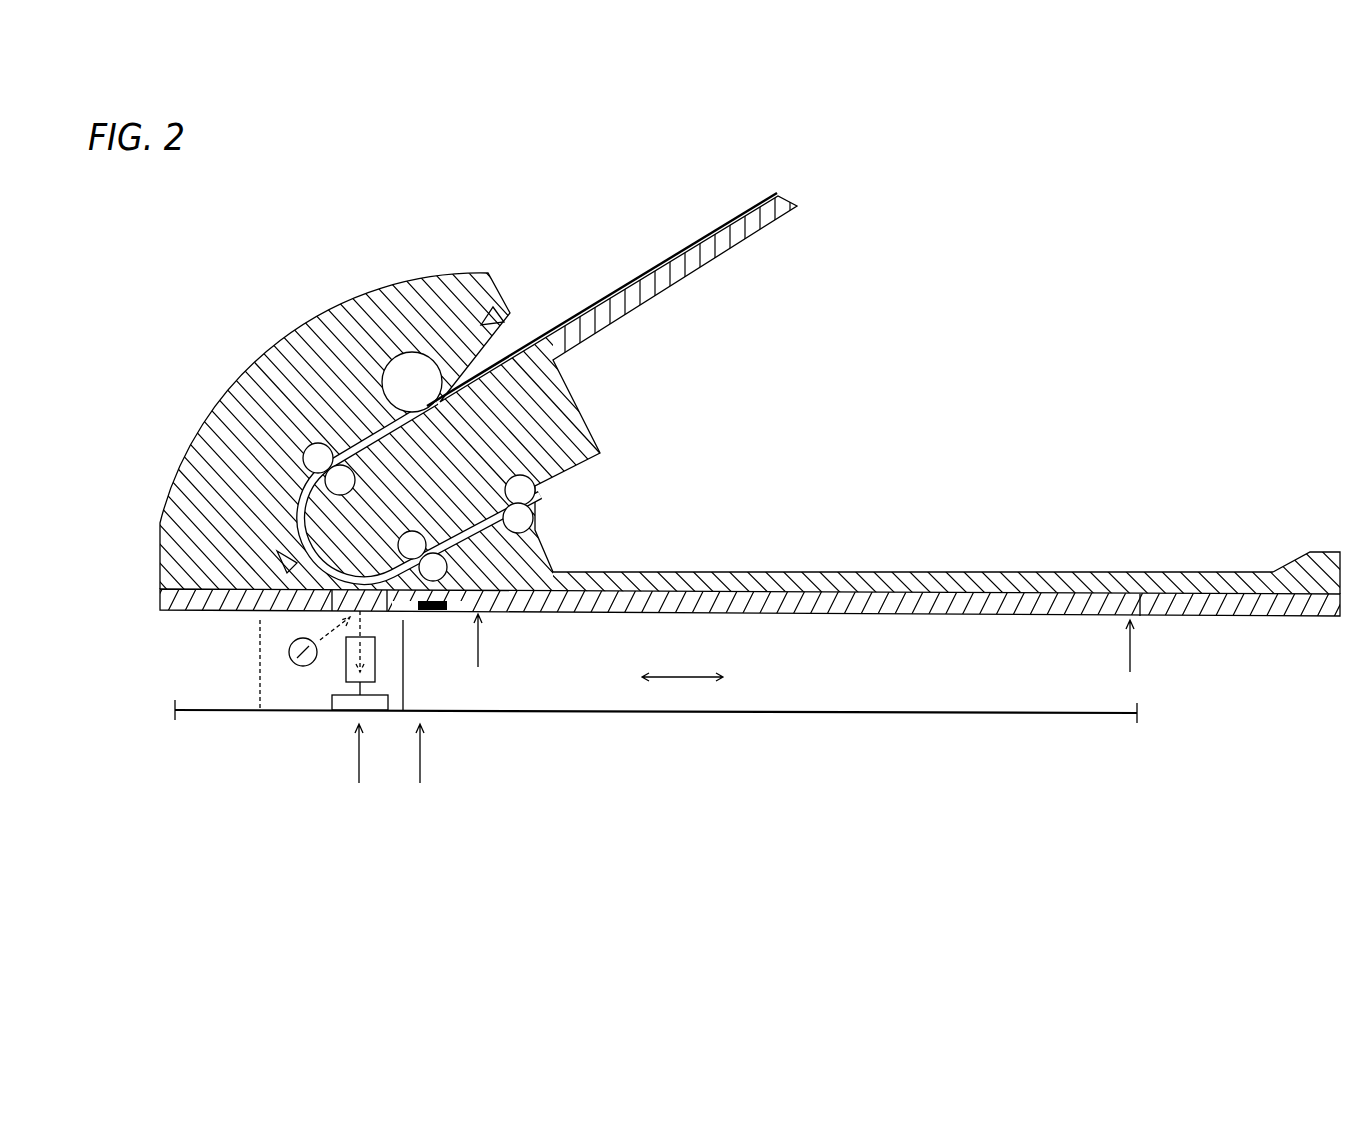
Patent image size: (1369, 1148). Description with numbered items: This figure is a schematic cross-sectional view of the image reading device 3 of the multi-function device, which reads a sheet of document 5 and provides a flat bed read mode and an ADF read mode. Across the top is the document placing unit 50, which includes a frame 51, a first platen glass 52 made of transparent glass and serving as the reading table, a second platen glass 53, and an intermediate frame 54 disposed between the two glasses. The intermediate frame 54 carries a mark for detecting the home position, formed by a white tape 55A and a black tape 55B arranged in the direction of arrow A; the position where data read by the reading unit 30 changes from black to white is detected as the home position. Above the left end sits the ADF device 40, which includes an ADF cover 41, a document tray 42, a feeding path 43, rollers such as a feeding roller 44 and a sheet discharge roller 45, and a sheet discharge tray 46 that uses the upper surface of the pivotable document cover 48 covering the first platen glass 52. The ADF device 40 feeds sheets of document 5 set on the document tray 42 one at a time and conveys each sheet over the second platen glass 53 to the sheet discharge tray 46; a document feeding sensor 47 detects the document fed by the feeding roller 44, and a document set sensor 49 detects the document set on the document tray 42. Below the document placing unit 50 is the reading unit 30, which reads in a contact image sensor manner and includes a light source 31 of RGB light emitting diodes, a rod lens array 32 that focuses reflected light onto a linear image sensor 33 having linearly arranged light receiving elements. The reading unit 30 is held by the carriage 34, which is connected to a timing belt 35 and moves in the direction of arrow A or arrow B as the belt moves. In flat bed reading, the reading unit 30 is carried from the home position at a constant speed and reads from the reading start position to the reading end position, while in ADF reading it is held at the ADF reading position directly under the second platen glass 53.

The image reading device 3 is at (905, 332).
The document 5 is at (672, 258).
The reading unit 30 is at (296, 722).
The light source 31 is at (289, 654).
The rod lens array 32 is at (346, 673).
The linear image sensor 33 is at (342, 711).
The carriage 34 is at (268, 711).
The timing belt 35 is at (955, 714).
The ADF device 40 is at (191, 374).
The ADF cover 41 is at (319, 275).
The document tray 42 is at (723, 254).
The feeding path 43 is at (293, 512).
The feeding roller 44 is at (408, 352).
The sheet discharge roller 45 is at (530, 520).
The sheet discharge tray 46 is at (905, 571).
The document feeding sensor 47 is at (277, 556).
The document cover 48 is at (1262, 571).
The document set sensor 49 is at (500, 312).
The document placing unit 50 is at (138, 620).
The frame 51 is at (170, 614).
The first platen glass 52 is at (873, 614).
The second platen glass 53 is at (373, 653).
The intermediate frame 54 is at (447, 612).
The white tape 55A is at (408, 612).
The black tape 55B is at (430, 612).